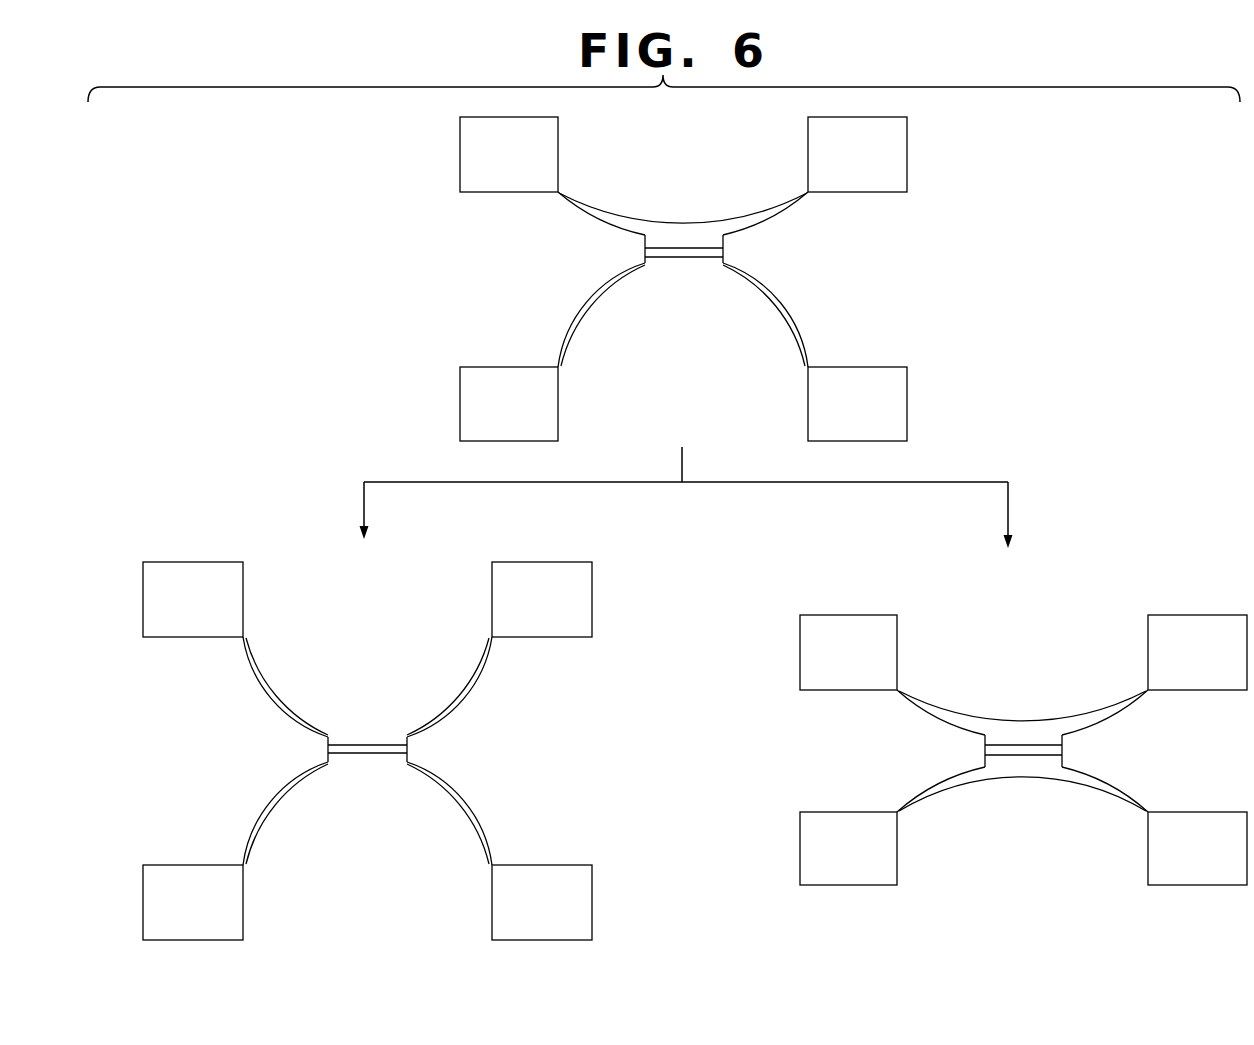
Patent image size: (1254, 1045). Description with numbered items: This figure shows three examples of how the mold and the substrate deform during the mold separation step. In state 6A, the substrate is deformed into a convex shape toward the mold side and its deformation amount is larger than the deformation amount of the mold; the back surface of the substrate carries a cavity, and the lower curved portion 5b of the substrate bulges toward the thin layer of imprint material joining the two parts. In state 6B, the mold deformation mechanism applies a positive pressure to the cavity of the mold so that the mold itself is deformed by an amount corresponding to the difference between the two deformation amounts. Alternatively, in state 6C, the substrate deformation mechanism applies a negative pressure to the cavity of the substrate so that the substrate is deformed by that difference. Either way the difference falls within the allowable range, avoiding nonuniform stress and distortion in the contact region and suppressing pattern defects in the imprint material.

The joint portion of second member 5b is at (688, 303).
The state 6A is at (362, 156).
The state 6B is at (168, 522).
The state 6C is at (1152, 562).